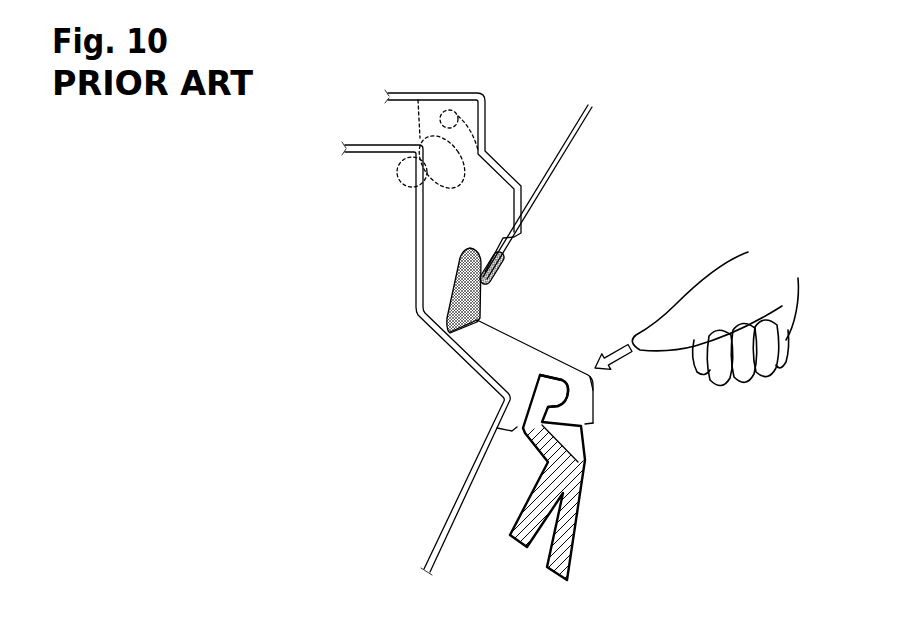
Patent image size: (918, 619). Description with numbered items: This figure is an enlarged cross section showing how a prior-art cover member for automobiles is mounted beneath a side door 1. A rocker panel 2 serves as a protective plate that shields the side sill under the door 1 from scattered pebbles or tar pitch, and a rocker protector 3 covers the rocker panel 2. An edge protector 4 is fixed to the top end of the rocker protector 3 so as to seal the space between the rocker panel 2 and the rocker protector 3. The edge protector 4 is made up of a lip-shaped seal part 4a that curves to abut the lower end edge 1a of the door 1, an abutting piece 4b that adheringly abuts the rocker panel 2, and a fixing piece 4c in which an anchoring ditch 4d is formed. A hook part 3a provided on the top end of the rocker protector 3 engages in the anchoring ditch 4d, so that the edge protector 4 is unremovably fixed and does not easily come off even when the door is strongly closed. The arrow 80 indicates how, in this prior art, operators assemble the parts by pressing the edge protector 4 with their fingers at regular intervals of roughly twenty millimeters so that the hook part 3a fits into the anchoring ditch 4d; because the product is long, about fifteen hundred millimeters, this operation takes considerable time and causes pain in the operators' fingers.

The side door 1 is at (583, 128).
The lower end edge 1a is at (505, 268).
The rocker panel 2 is at (455, 512).
The rocker protector 3 is at (603, 430).
The hook part 3a is at (565, 372).
The edge protector 4 is at (518, 367).
The lip-shaped seal part 4a is at (450, 272).
The abutting piece 4b is at (498, 431).
The fixing piece 4c is at (597, 417).
The anchoring ditch 4d is at (581, 372).
The arrow 80 is at (624, 360).